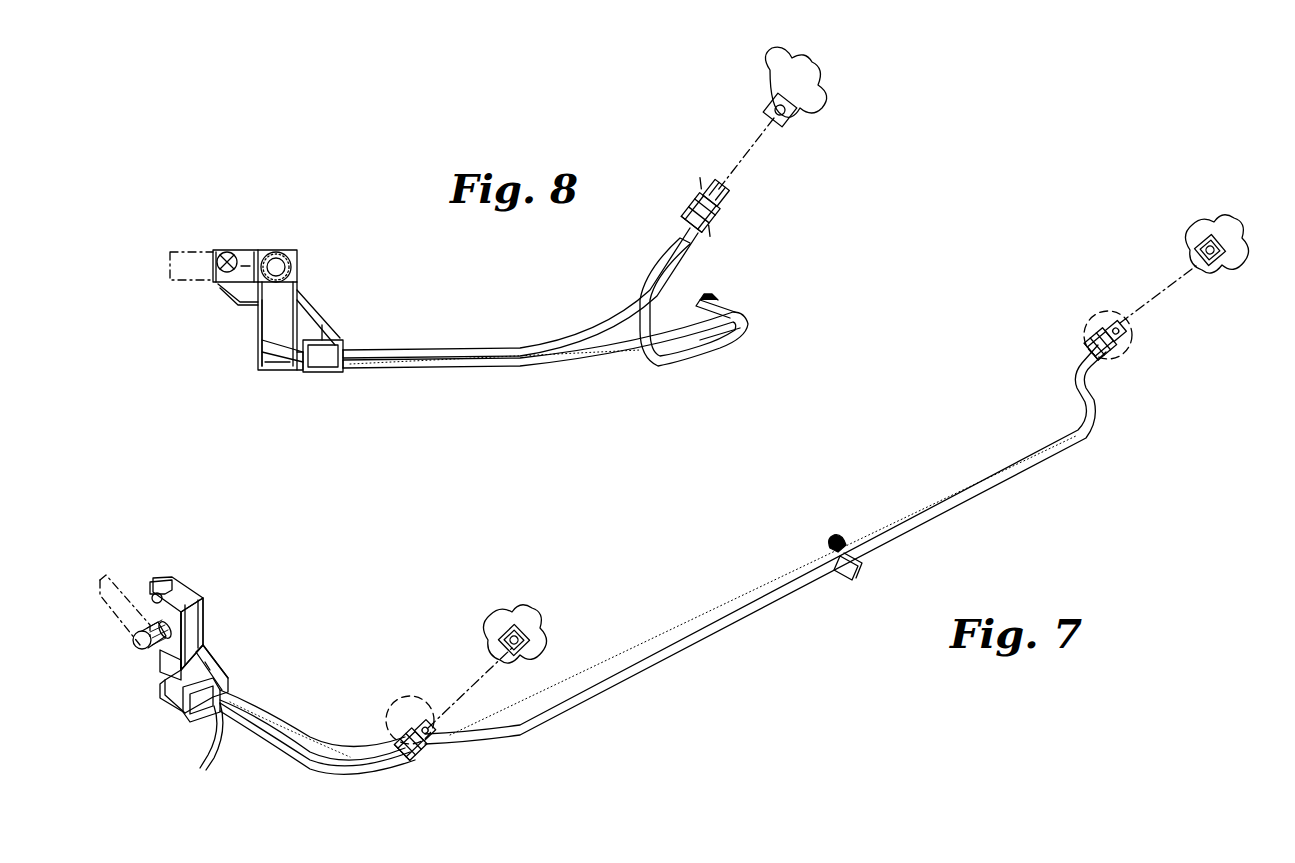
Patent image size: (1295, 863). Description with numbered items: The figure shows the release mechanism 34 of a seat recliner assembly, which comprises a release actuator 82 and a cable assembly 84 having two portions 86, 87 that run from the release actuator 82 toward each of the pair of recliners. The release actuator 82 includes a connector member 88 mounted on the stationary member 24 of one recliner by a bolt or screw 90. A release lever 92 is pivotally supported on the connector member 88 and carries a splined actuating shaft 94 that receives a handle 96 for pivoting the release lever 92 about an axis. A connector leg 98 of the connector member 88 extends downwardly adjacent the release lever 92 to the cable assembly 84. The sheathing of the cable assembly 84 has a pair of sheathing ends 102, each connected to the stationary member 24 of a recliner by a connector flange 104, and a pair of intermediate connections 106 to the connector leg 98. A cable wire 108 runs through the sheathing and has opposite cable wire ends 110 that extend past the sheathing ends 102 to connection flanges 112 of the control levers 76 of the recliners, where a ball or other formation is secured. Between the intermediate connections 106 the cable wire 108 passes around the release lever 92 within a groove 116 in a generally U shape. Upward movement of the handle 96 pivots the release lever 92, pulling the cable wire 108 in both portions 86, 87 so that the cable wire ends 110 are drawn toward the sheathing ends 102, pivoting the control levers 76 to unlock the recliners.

In FIG. 7, the stationary member 24 is at (424, 700).
In FIG. 8, the release mechanism 34 is at (780, 316).
In FIG. 7, the release mechanism 34 is at (752, 648).
In FIG. 8, the control lever 76 is at (795, 75).
In FIG. 7, the control lever 76 is at (520, 622).
In FIG. 8, the release actuator 82 is at (313, 250).
In FIG. 7, the release actuator 82 is at (209, 585).
In FIG. 8, the cable assembly 84 is at (705, 355).
In FIG. 7, the cable assembly 84 is at (272, 762).
In FIG. 8, the cable portion 86 is at (576, 356).
In FIG. 7, the cable portion 86 is at (302, 780).
In FIG. 8, the cable portion 87 is at (620, 356).
In FIG. 7, the cable portion 87 is at (800, 582).
In FIG. 8, the connector member 88 is at (258, 256).
In FIG. 7, the connector member 88 is at (200, 618).
In FIG. 8, the screw 90 is at (242, 256).
In FIG. 7, the screw 90 is at (158, 592).
In FIG. 8, the release lever 92 is at (265, 335).
In FIG. 7, the release lever 92 is at (165, 665).
In FIG. 8, the splined actuating shaft 94 is at (296, 250).
In FIG. 7, the splined actuating shaft 94 is at (145, 625).
In FIG. 8, the handle 96 is at (190, 248).
In FIG. 7, the handle 96 is at (113, 585).
In FIG. 8, the connector leg 98 is at (310, 305).
In FIG. 7, the connector leg 98 is at (215, 660).
In FIG. 8, the sheathing end 102 is at (700, 245).
In FIG. 7, the sheathing end 102 is at (408, 754).
In FIG. 8, the connector flange 104 is at (722, 208).
In FIG. 7, the connector flange 104 is at (402, 728).
In FIG. 8, the intermediate connection 106 is at (343, 350).
In FIG. 7, the intermediate connection 106 is at (210, 735).
In FIG. 8, the cable wire 108 is at (300, 368).
In FIG. 7, the cable wire 108 is at (178, 702).
In FIG. 8, the cable wire end 110 is at (752, 145).
In FIG. 7, the cable wire end 110 is at (486, 660).
In FIG. 8, the connection flange 112 is at (765, 95).
In FIG. 7, the connection flange 112 is at (520, 652).
In FIG. 8, the groove 116 is at (275, 368).